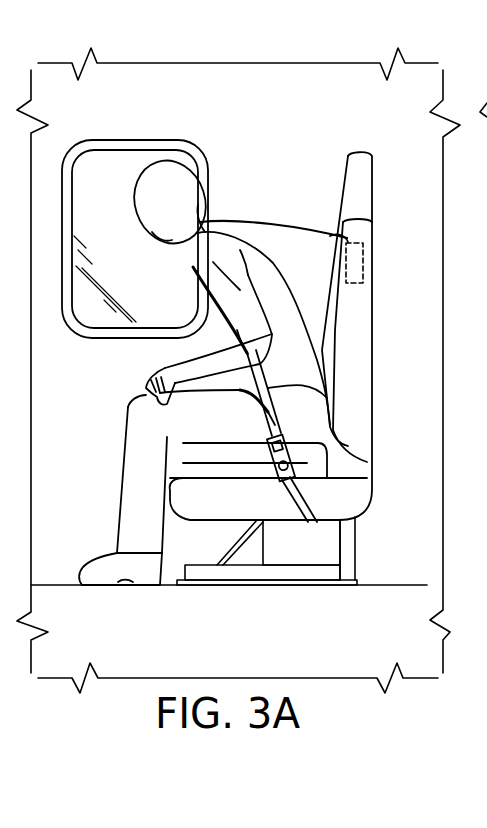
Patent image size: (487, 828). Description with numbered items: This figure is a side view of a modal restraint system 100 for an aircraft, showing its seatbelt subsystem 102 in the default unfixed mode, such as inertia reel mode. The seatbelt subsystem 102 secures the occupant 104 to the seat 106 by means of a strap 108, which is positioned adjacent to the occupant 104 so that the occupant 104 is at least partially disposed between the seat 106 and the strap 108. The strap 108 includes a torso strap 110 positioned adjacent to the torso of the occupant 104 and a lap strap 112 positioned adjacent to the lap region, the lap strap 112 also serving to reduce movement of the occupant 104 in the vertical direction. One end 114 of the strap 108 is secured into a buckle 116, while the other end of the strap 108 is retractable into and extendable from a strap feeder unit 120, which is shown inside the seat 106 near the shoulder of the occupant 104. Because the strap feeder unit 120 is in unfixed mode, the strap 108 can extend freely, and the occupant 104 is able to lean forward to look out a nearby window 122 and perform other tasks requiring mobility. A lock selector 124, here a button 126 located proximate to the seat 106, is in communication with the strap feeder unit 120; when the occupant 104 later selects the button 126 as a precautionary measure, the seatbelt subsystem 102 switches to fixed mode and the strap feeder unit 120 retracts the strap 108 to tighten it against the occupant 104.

The modal restraint system 100 is at (128, 78).
The seatbelt subsystem 102 is at (250, 220).
The occupant 104 is at (167, 160).
The seat 106 is at (195, 513).
The strap 108 is at (300, 180).
The torso strap 110 is at (312, 222).
The lap strap 112 is at (247, 408).
The end of strap 114 is at (283, 463).
The buckle 116 is at (298, 459).
The strap feeder unit 120 is at (366, 263).
The window 122 is at (108, 338).
The lock selector 124 is at (267, 554).
The button 126 is at (283, 466).